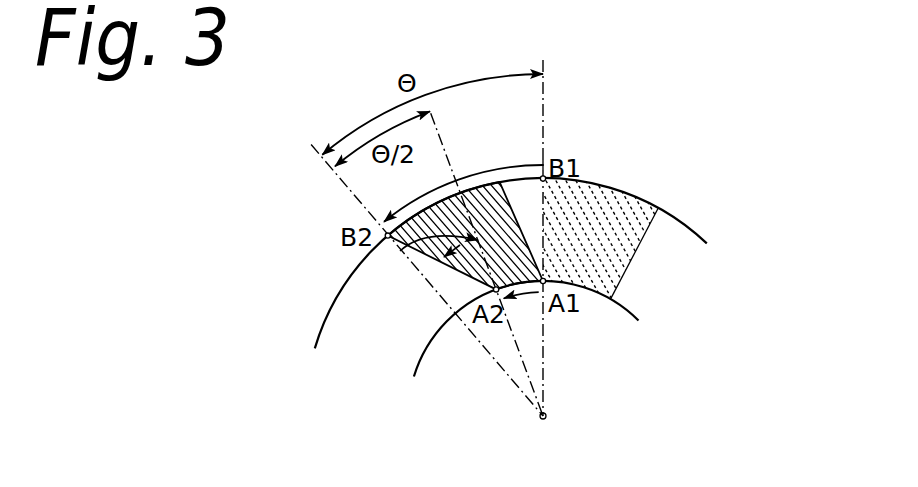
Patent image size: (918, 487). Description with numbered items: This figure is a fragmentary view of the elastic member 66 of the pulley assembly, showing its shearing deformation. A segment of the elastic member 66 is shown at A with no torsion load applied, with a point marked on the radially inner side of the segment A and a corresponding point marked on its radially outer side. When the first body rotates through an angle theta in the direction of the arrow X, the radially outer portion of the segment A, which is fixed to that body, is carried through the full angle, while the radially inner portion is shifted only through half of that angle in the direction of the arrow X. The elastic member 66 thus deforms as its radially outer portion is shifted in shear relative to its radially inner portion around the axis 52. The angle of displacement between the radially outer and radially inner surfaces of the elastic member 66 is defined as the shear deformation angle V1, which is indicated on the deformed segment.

The first axis 52 is at (557, 415).
The elastic member 66 is at (620, 216).
The segment of the elastic member A is at (630, 268).
The arrow indicating direction of rotation X is at (645, 166).
The shear deformation angle V1 is at (400, 251).